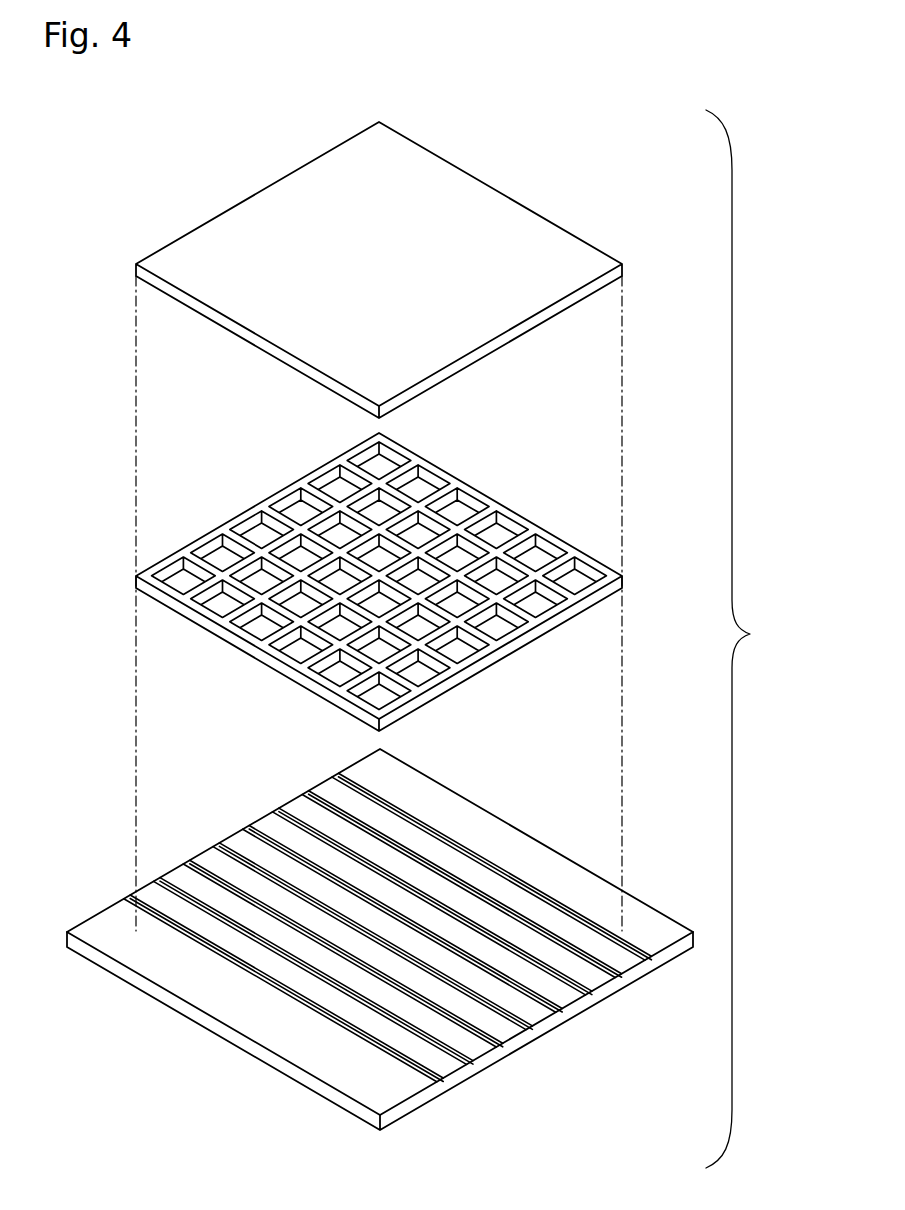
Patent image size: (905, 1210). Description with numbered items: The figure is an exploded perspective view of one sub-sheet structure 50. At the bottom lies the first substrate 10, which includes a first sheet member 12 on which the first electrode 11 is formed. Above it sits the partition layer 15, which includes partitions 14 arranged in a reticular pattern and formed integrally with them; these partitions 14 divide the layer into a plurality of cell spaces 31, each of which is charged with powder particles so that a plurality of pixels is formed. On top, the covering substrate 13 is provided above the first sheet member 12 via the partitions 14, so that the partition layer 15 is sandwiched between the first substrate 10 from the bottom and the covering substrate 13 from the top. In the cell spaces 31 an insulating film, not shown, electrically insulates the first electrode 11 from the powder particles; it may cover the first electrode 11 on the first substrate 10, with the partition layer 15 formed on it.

The first substrate 10 is at (532, 850).
The first electrode 11 is at (262, 845).
The first sheet member 12 is at (472, 815).
The covering substrate 13 is at (530, 223).
The partitions 14 is at (258, 511).
The partition layer 15 is at (573, 548).
The cell space 31 is at (497, 530).
The sub-sheet structure 50 is at (751, 639).